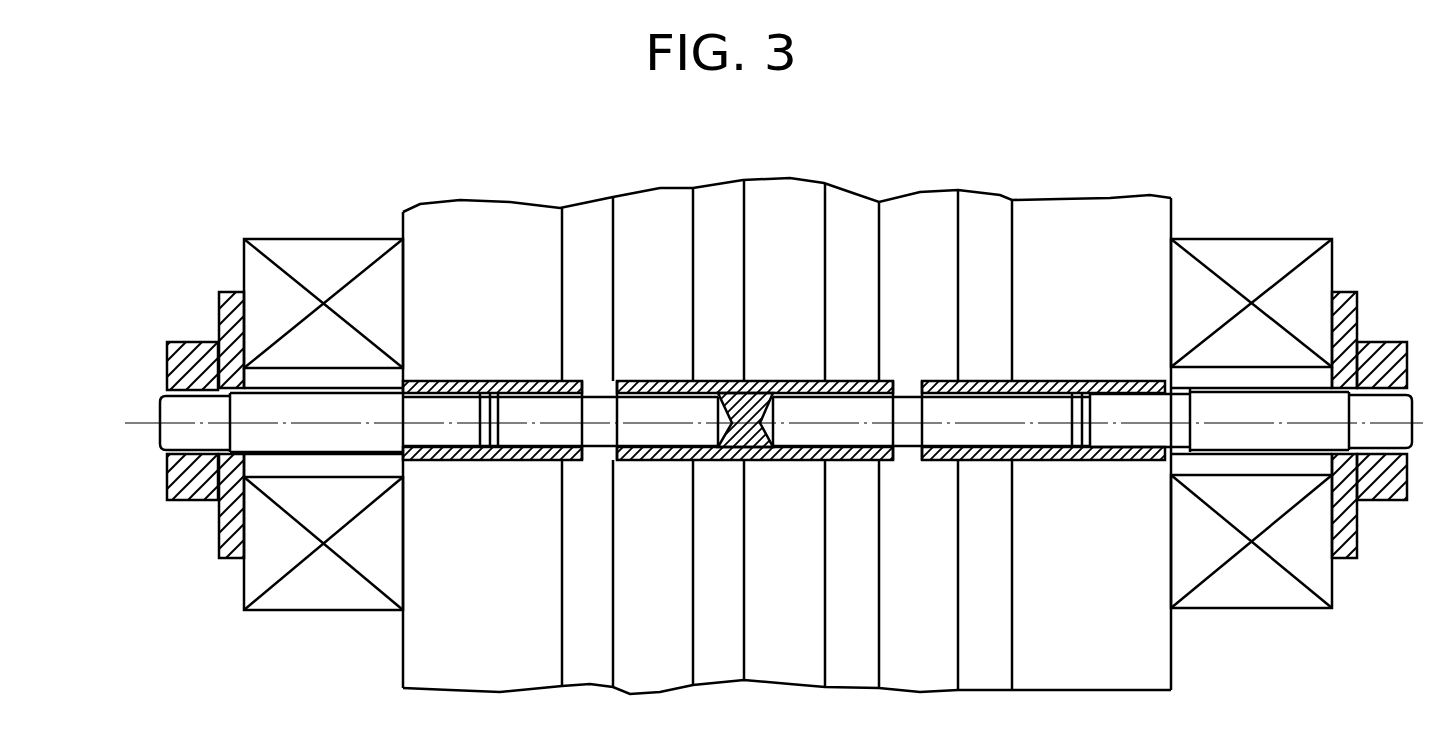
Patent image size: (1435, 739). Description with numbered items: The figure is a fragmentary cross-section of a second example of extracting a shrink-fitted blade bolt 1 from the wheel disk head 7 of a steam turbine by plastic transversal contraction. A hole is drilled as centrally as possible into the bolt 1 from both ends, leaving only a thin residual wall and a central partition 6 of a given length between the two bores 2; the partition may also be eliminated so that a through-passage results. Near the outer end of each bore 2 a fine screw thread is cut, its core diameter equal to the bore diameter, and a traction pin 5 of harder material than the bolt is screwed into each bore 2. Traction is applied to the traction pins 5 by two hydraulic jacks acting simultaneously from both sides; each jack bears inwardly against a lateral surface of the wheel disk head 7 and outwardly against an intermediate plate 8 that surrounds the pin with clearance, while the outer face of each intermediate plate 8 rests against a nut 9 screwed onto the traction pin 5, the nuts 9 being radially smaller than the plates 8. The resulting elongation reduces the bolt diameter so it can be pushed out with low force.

The blade bolt 1 is at (684, 468).
The bore 2 is at (746, 420).
The traction pin 5 is at (260, 415).
The central partition 6 is at (740, 423).
The wheel disk head 7 is at (1177, 203).
The intermediate plate 8 is at (207, 553).
The nut 9 is at (180, 480).